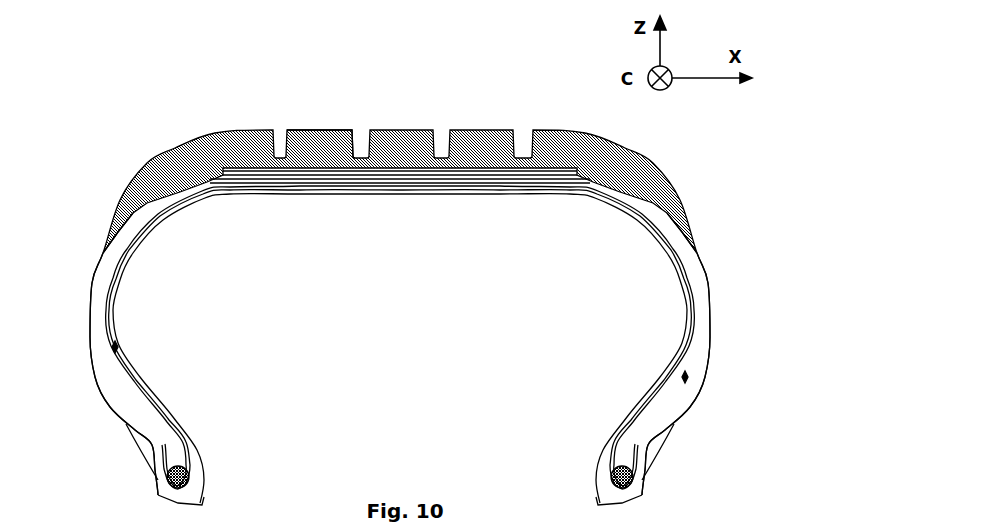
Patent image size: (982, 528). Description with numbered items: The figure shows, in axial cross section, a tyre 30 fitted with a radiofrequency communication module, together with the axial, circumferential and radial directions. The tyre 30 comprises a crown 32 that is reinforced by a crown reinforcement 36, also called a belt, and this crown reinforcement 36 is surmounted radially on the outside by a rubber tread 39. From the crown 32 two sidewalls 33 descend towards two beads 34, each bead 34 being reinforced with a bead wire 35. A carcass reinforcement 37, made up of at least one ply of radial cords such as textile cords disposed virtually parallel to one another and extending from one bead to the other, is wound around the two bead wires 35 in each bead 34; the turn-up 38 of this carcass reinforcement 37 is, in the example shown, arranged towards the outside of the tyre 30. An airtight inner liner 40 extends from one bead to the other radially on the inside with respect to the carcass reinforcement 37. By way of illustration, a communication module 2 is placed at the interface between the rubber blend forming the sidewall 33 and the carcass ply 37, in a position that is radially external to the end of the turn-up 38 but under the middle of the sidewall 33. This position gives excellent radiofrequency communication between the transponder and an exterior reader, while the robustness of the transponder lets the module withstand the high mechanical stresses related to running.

The tyre 30 is at (252, 90).
The crown 32 is at (455, 105).
The sidewall 33 is at (95, 307).
The bead 34 is at (145, 437).
The bead wire 35 is at (163, 495).
The crown reinforcement 36 is at (468, 183).
The carcass reinforcement 37 is at (130, 240).
The turn-up 38 is at (147, 417).
The rubber tread 39 is at (388, 130).
The airtight inner liner 40 is at (118, 312).
The communication module 2 is at (112, 347).